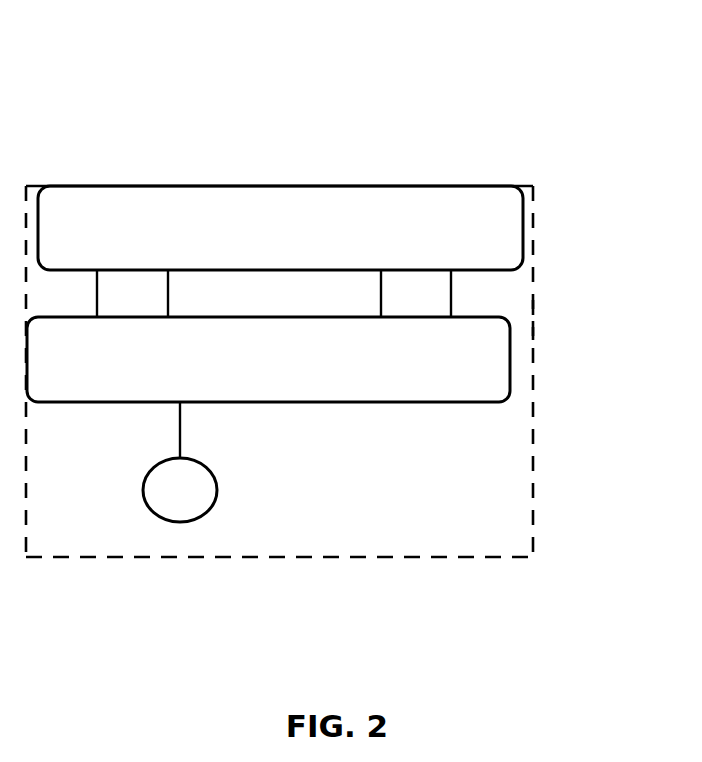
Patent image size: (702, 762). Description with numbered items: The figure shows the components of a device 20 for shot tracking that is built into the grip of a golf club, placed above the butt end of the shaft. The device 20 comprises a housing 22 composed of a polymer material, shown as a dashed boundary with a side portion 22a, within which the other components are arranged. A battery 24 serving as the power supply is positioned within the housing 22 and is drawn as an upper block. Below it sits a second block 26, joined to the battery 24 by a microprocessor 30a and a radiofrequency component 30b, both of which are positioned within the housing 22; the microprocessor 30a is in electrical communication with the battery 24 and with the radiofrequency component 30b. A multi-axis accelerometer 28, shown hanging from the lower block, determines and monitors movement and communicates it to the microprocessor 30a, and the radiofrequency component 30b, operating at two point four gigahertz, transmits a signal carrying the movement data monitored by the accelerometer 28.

The device 20 is at (442, 84).
The housing 22 is at (28, 185).
The housing side wall 22a is at (534, 315).
The battery 24 is at (280, 228).
The lower module 26 is at (268, 359).
The multi-axis accelerometer 28 is at (180, 462).
The microprocessor 30a is at (132, 293).
The radiofrequency component 30b is at (416, 293).